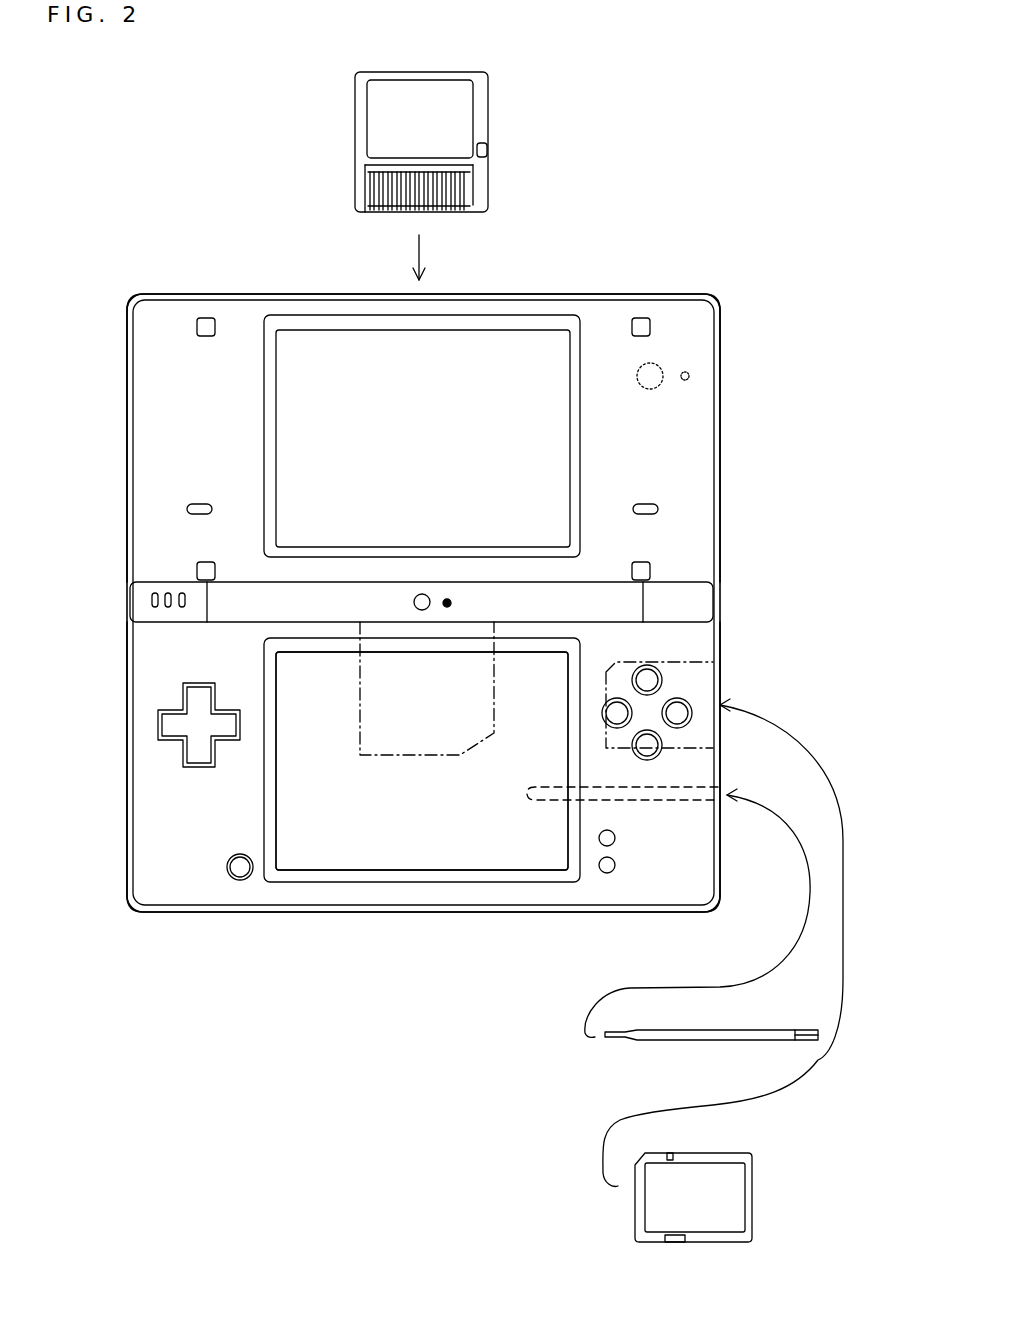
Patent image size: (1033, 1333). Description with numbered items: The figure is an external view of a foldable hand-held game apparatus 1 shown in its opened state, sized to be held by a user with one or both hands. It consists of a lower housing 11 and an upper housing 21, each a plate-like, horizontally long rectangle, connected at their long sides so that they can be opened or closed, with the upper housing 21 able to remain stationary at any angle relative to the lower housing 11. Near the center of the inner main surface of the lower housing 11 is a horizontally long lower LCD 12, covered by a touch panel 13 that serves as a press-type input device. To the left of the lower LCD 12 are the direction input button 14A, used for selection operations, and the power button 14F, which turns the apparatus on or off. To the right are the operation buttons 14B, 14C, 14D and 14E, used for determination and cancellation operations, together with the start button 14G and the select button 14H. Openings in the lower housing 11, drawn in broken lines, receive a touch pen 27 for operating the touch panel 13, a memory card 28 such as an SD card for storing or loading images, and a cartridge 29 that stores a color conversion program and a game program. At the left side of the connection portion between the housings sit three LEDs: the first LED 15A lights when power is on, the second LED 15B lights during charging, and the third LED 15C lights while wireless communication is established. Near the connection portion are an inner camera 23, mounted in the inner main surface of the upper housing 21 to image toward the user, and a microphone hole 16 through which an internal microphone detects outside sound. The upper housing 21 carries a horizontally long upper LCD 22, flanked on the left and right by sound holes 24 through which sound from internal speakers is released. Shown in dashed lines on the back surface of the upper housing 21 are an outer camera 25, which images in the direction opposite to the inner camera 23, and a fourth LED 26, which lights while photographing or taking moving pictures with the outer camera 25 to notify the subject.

The hand-held game apparatus 1 is at (744, 230).
The lower housing 11 is at (330, 905).
The lower LCD 12 is at (390, 848).
The touch panel 13 is at (515, 878).
The direction input button 14A is at (158, 730).
The operation button 14B is at (680, 697).
The operation button 14C is at (664, 742).
The operation button 14D is at (664, 677).
The operation button 14E is at (617, 698).
The power button 14F is at (240, 880).
The start button 14G is at (615, 838).
The select button 14H is at (607, 873).
The first LED 15A is at (182, 590).
The second LED 15B is at (168, 590).
The third LED 15C is at (152, 600).
The microphone hole 16 is at (452, 603).
The upper housing 21 is at (607, 302).
The upper LCD 22 is at (311, 358).
The inner camera 23 is at (413, 602).
The sound holes 24 is at (188, 508).
The outer camera 25 is at (657, 386).
The fourth LED 26 is at (690, 376).
The touch pen 27 is at (722, 1043).
The memory card 28 is at (755, 1200).
The cartridge 29 is at (457, 72).